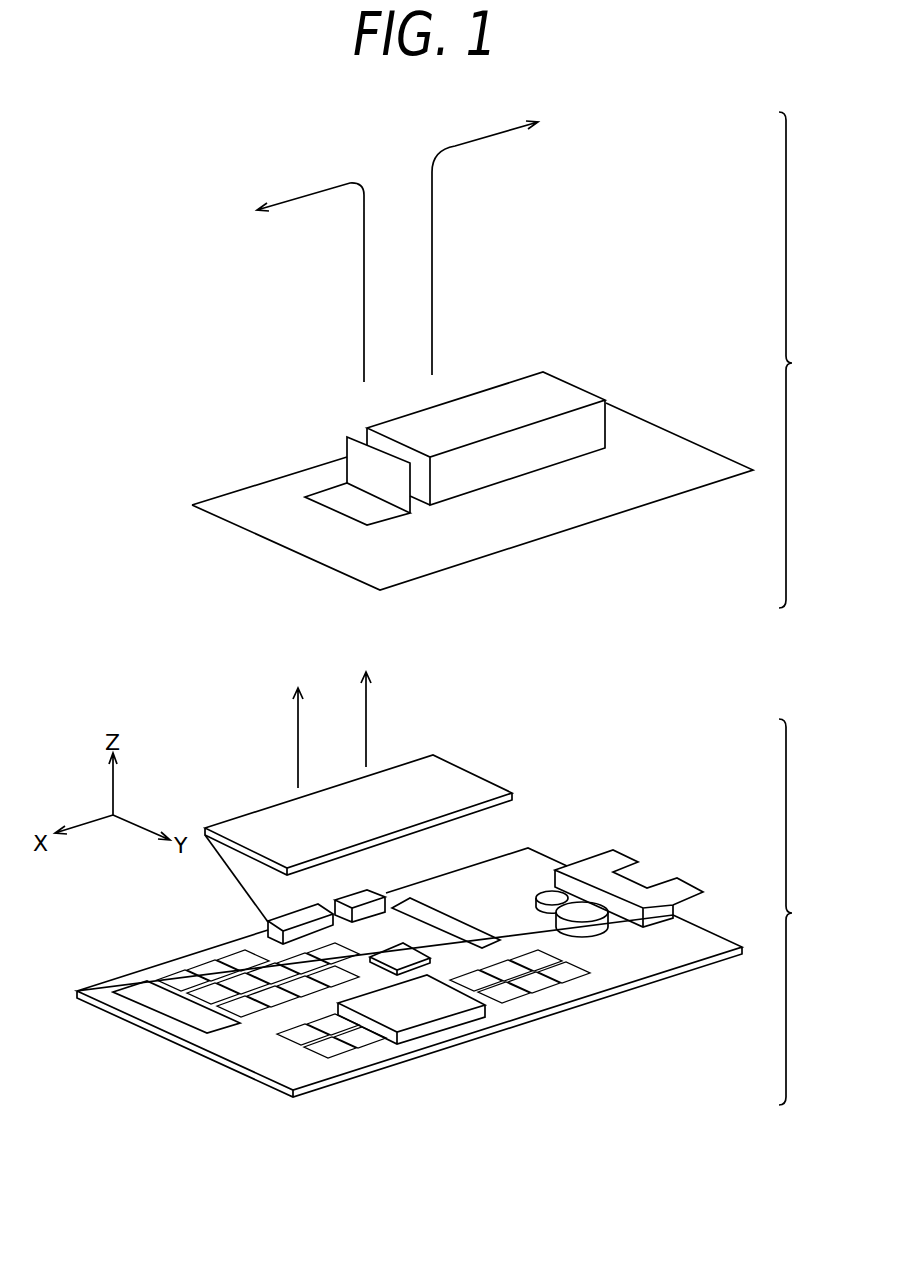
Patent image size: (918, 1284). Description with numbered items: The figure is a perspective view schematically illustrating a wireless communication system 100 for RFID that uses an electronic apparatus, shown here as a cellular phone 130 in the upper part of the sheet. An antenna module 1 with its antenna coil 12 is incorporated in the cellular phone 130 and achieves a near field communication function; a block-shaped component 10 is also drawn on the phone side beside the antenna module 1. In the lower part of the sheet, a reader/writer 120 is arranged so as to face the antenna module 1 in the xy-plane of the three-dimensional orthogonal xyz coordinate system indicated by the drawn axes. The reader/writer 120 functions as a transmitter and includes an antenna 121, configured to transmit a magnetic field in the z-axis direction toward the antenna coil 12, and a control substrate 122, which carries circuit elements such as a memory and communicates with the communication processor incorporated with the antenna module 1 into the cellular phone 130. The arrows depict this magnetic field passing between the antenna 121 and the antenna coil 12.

The wireless communication system 100 is at (620, 158).
The cellular phone 130 is at (287, 532).
The magnet 10 is at (541, 392).
The antenna module 1 is at (318, 480).
The antenna coil 12 is at (327, 497).
The reader/writer 120 is at (455, 888).
The antenna 121 is at (427, 770).
The control substrate 122 is at (543, 866).